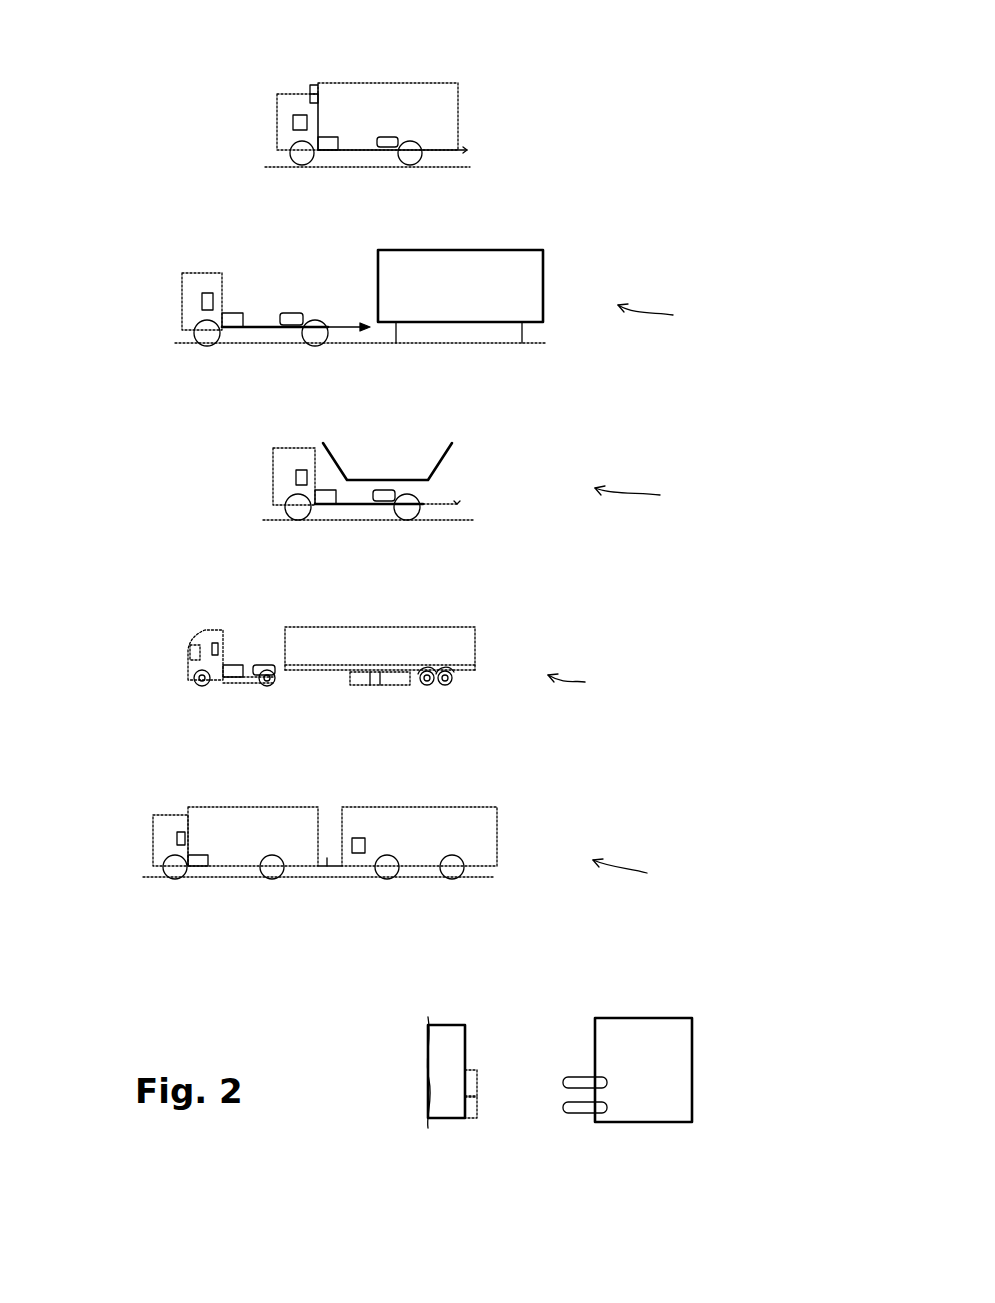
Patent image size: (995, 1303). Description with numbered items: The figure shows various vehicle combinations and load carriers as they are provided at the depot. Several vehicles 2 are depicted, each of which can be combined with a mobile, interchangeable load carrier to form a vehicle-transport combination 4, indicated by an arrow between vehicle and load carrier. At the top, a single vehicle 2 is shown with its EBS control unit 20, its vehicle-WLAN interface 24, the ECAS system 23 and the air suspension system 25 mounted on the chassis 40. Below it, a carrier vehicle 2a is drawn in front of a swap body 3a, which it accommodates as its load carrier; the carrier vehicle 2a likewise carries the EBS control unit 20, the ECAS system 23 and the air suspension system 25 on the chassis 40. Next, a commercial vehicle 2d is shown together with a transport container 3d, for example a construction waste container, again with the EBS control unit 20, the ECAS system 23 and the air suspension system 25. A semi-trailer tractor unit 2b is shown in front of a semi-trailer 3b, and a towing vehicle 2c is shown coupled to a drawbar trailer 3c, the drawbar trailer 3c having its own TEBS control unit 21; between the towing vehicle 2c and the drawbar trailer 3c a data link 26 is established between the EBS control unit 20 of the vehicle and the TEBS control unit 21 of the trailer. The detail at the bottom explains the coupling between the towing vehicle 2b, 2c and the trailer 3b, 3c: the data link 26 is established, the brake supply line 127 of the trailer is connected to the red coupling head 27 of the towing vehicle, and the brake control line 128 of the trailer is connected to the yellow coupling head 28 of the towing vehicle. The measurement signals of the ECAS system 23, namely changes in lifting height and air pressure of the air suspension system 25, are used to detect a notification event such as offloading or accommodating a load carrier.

The vehicle 2 is at (277, 148).
The carrier vehicle 2a is at (182, 273).
The semi-trailer tractor unit 2b is at (199, 627).
The towing vehicle 2c is at (153, 815).
The commercial vehicle 2d is at (273, 455).
The swap body 3a is at (543, 250).
The semi-trailer 3b is at (475, 632).
The drawbar trailer 3c is at (497, 807).
The transport container 3d is at (452, 443).
The vehicle-transport combination 4 is at (631, 596).
The EBS control unit 20 is at (293, 118).
The TEBS control unit 21 is at (362, 855).
The ECAS system 23 is at (323, 152).
The vehicle-WLAN interface 24 is at (314, 85).
The air suspension system 25 is at (385, 148).
The data link 26 is at (333, 868).
The red coupling head 27 is at (478, 1085).
The yellow coupling head 28 is at (478, 1112).
The chassis 40 is at (350, 152).
The brake supply line 127 is at (580, 1077).
The brake control line 128 is at (582, 1113).